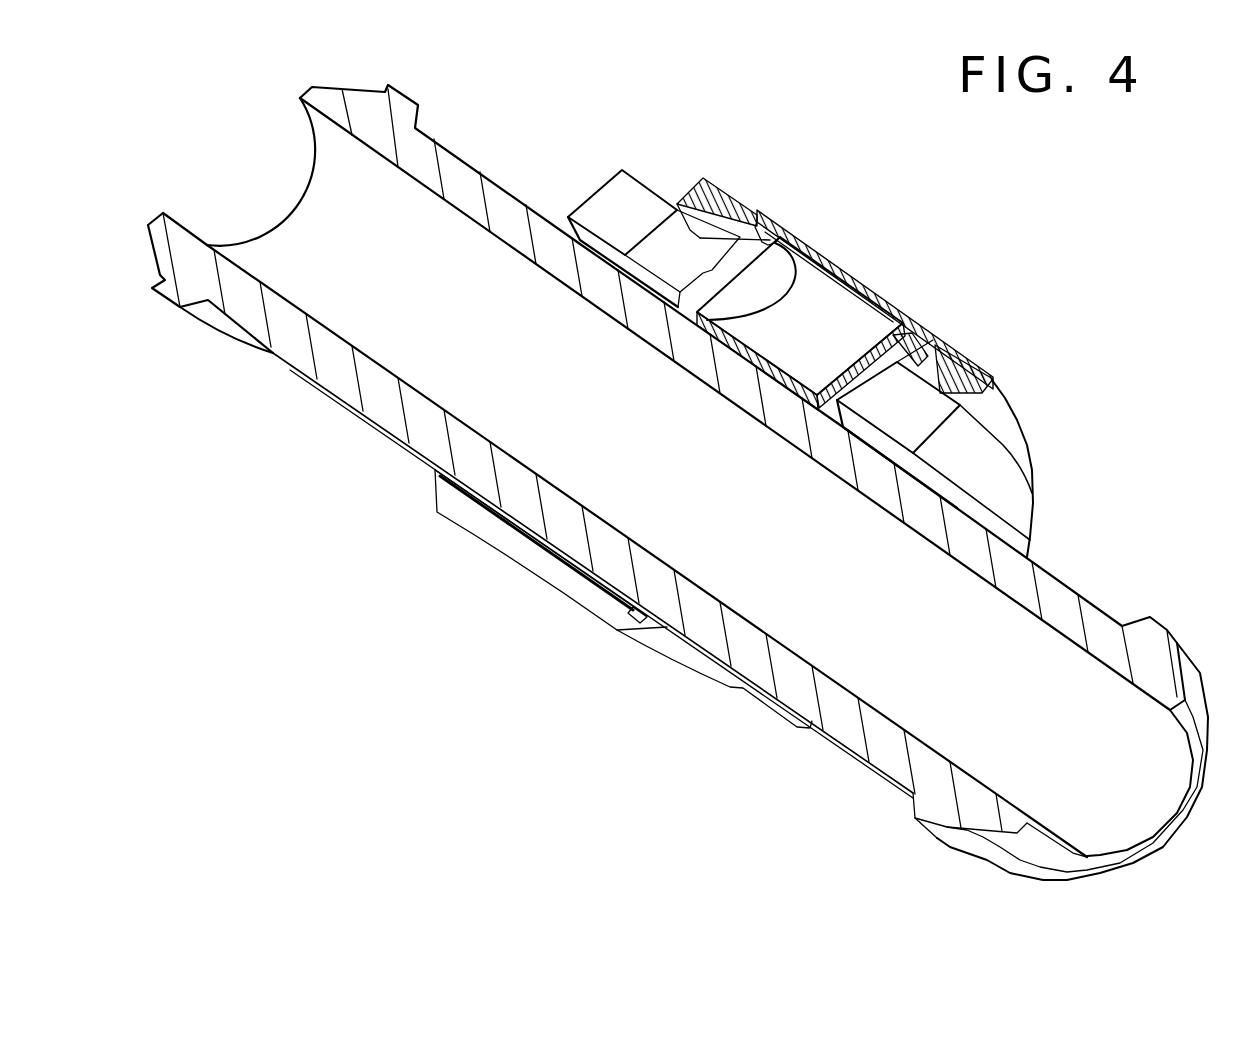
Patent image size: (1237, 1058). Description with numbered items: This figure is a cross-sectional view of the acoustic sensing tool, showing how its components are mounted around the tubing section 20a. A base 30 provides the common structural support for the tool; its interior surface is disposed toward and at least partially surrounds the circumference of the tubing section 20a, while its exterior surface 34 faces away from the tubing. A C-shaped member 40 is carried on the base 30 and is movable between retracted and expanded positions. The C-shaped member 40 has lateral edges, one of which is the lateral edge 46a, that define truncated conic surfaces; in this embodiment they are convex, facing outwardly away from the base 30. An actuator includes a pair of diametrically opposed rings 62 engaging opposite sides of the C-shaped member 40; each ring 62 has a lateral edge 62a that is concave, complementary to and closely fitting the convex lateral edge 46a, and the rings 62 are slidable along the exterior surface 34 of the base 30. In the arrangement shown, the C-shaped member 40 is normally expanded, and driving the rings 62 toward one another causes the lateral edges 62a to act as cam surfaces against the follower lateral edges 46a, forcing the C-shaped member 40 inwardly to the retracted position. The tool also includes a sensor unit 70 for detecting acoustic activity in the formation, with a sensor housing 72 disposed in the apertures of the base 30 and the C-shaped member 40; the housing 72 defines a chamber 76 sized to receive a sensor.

The tubing section 20a is at (338, 373).
The base 30 is at (1013, 517).
The exterior surface 34 is at (980, 420).
The C-shaped member 40 is at (903, 335).
The lateral edge 46a is at (717, 225).
The ring 62 is at (690, 178).
The lateral edge 62a is at (715, 222).
The sensor unit 70 is at (855, 272).
The sensor housing 72 is at (860, 297).
The chamber 76 is at (803, 272).